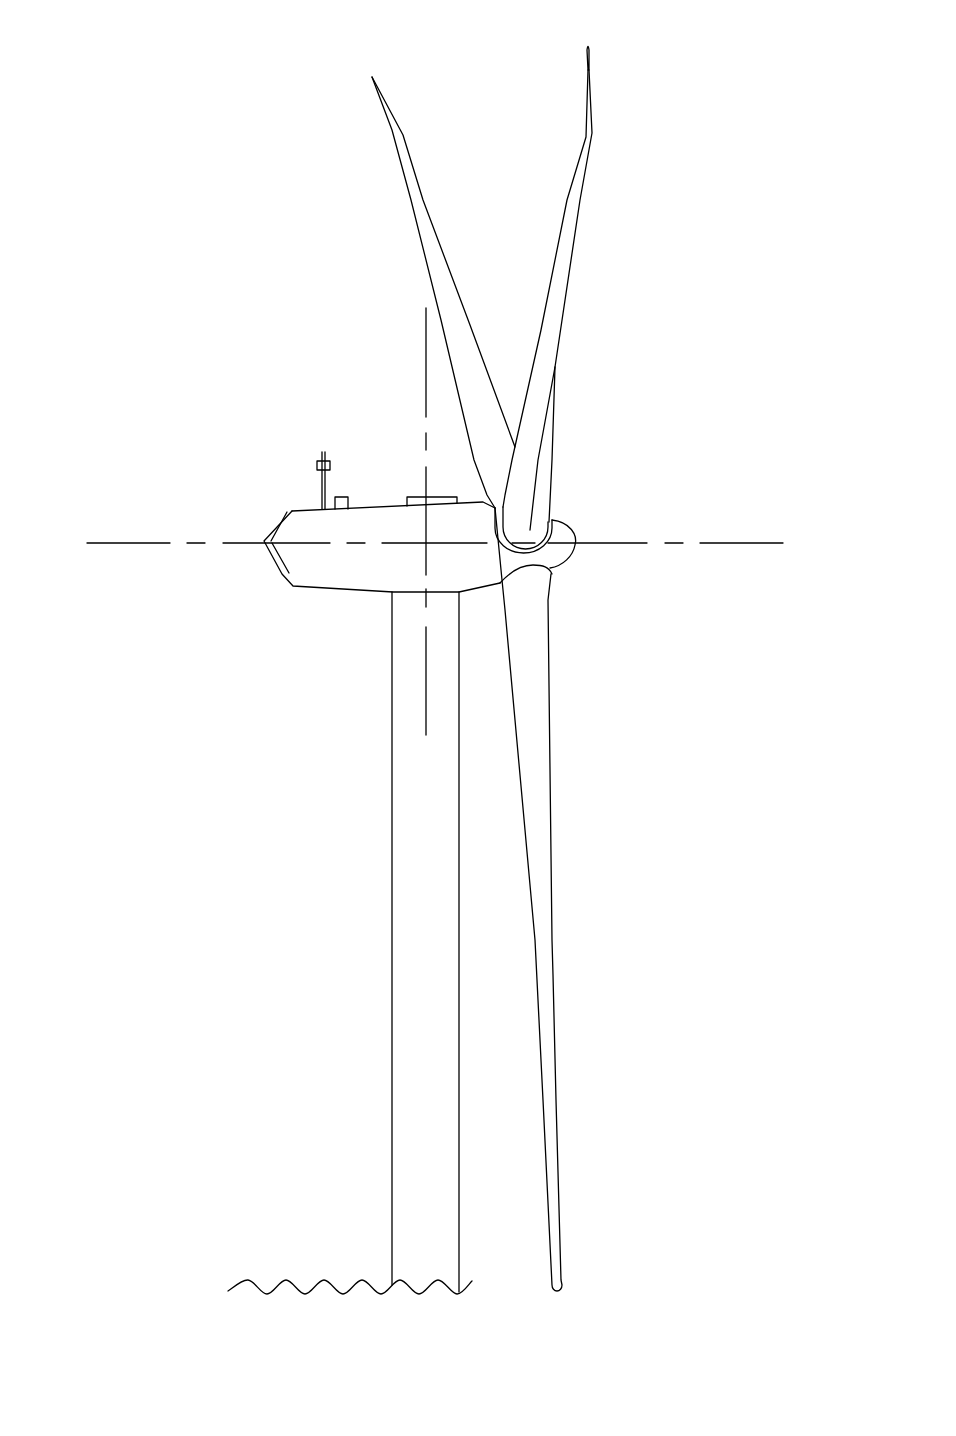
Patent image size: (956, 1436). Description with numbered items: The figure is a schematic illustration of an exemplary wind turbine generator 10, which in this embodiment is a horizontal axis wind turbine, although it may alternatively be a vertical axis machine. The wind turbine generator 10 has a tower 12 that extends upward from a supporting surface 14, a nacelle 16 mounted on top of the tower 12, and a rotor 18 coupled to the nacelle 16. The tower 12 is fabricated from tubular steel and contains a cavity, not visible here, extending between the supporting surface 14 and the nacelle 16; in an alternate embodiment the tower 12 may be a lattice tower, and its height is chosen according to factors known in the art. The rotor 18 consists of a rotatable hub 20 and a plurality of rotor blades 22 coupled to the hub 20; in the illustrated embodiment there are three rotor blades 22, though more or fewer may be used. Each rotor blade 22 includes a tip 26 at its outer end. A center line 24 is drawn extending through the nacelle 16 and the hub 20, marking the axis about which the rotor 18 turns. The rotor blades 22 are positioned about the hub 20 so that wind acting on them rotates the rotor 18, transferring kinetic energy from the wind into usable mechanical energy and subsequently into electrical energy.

The wind turbine generator 10 is at (228, 302).
The tower 12 is at (392, 885).
The supporting surface 14 is at (300, 1290).
The nacelle 16 is at (328, 594).
The rotor 18 is at (575, 611).
The rotatable hub 20 is at (571, 556).
The rotor blades 22 is at (412, 163).
The center line 24 is at (723, 543).
The tip 26 is at (591, 38).